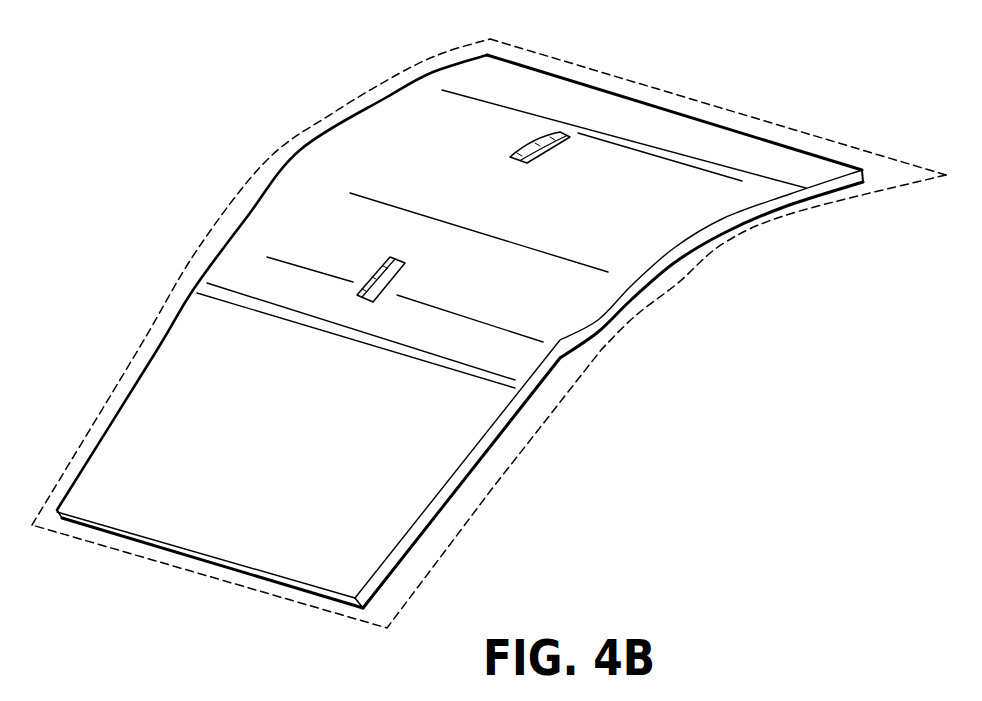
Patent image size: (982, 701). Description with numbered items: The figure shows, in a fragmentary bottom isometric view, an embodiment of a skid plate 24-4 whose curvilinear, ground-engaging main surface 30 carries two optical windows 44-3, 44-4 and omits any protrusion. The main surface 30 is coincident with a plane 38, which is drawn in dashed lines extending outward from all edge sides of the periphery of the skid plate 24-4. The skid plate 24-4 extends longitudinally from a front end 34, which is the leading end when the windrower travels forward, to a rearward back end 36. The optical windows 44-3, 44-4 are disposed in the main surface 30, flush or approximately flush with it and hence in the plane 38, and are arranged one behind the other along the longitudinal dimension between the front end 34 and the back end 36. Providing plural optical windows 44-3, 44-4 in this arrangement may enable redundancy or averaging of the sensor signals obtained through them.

The skid plate 24-4 is at (130, 148).
The main surface 30 is at (640, 244).
The front end 34 is at (704, 123).
The back end 36 is at (187, 550).
The plane 38 is at (97, 417).
The optical window 44-3 is at (517, 147).
The optical window 44-4 is at (375, 273).